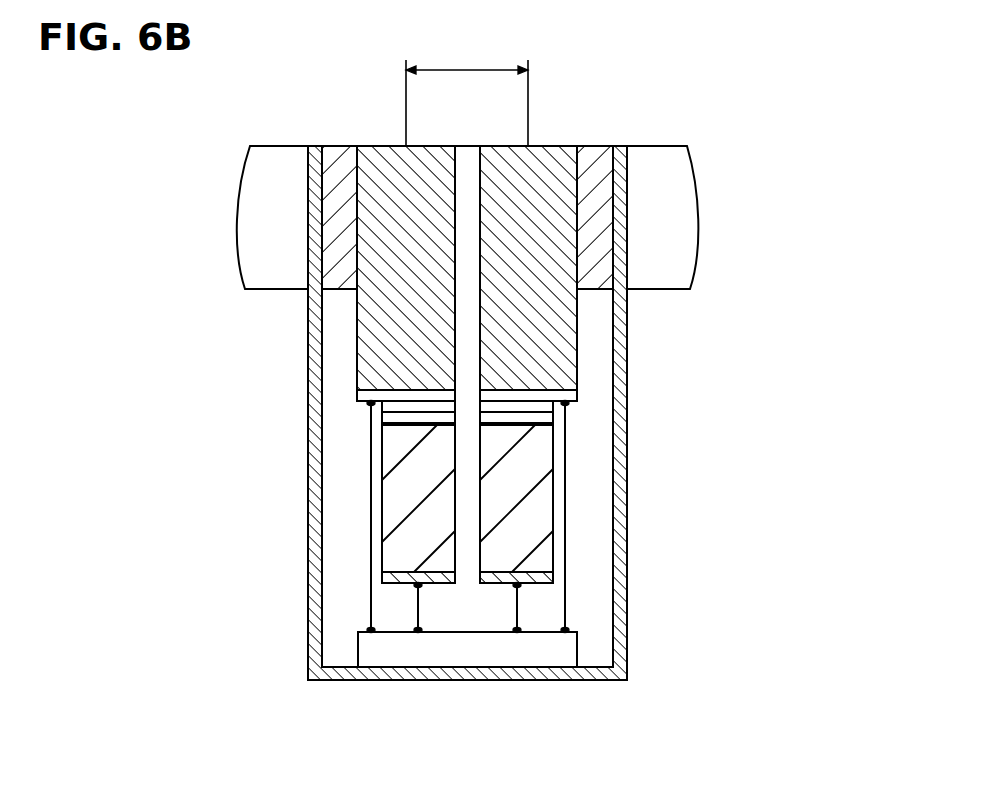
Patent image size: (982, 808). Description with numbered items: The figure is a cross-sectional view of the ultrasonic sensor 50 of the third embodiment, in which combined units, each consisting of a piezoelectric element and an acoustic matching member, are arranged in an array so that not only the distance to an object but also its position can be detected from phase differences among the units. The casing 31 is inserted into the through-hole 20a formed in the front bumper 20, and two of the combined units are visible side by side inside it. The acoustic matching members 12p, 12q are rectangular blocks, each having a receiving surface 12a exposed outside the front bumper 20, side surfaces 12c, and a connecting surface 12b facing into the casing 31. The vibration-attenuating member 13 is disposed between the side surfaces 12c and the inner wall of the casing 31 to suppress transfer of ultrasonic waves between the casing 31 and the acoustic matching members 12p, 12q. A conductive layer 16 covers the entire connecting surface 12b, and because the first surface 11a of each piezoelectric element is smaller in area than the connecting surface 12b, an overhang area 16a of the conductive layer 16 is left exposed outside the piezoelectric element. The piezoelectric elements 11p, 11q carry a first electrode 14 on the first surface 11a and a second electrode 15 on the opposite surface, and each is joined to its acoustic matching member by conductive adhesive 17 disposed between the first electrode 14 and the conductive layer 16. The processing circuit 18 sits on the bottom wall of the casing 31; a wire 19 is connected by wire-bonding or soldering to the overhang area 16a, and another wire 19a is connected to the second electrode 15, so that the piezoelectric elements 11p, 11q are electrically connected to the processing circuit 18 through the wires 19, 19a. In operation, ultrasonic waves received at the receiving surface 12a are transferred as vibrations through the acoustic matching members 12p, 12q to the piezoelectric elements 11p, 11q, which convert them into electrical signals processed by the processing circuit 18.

The ultrasonic sensor 50 is at (670, 123).
The front bumper 20 is at (287, 150).
The through-hole 20a is at (308, 252).
The casing 31 is at (627, 648).
The vibration-attenuating member 13 is at (345, 157).
The receiving surface 12a is at (493, 147).
The side surfaces 12c is at (585, 172).
The acoustic matching member 12p is at (367, 352).
The acoustic matching member 12q is at (570, 345).
The connecting surface 12b is at (368, 398).
The conductive layer 16 is at (565, 402).
The overhang area 16a is at (367, 407).
The conductive adhesive 17 is at (565, 415).
The first electrode 14 is at (567, 430).
The piezoelectric element 11p is at (388, 518).
The piezoelectric element 11q is at (565, 518).
The first surface 11a is at (565, 462).
The second electrode 15 is at (387, 575).
The wire 19 is at (370, 598).
The wire 19a is at (418, 603).
The processing circuit 18 is at (368, 643).